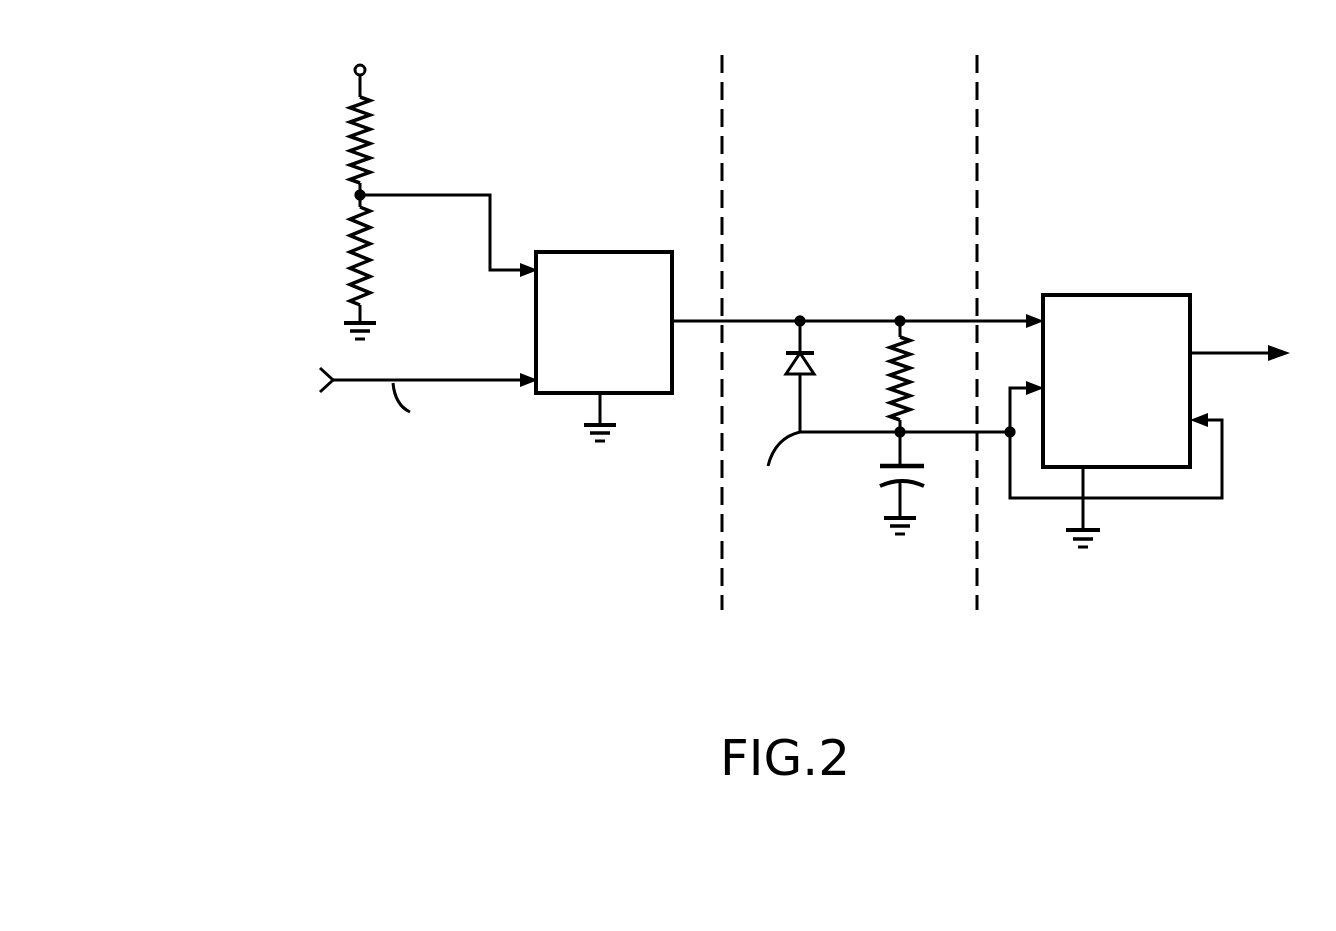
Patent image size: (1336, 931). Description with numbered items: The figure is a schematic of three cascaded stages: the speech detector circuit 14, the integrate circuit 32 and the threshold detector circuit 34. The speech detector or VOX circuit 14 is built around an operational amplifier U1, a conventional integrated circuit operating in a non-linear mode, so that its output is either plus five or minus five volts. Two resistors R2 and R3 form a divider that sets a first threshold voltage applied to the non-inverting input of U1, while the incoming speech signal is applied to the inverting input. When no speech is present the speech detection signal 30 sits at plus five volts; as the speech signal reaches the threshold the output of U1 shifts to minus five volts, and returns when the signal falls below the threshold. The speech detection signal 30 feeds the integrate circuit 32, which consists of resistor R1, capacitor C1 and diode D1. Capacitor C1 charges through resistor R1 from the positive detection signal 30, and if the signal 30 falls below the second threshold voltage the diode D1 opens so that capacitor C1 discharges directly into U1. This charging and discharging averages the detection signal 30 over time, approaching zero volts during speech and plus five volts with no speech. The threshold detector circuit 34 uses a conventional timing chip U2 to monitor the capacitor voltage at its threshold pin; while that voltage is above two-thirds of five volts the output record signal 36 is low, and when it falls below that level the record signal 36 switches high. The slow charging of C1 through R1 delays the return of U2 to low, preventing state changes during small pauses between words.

The speech detector circuit 14 is at (444, 236).
The speech detection signal 30 is at (714, 321).
The integrate circuit 32 is at (891, 294).
The threshold detector circuit 34 is at (1113, 300).
The output record signal 36 is at (1228, 353).
The resistor R1 is at (907, 380).
The resistor R2 is at (356, 134).
The resistor R3 is at (356, 240).
The capacitor C1 is at (886, 467).
The diode D1 is at (792, 368).
The operational amplifier U1 is at (638, 252).
The timing chip U2 is at (1160, 295).